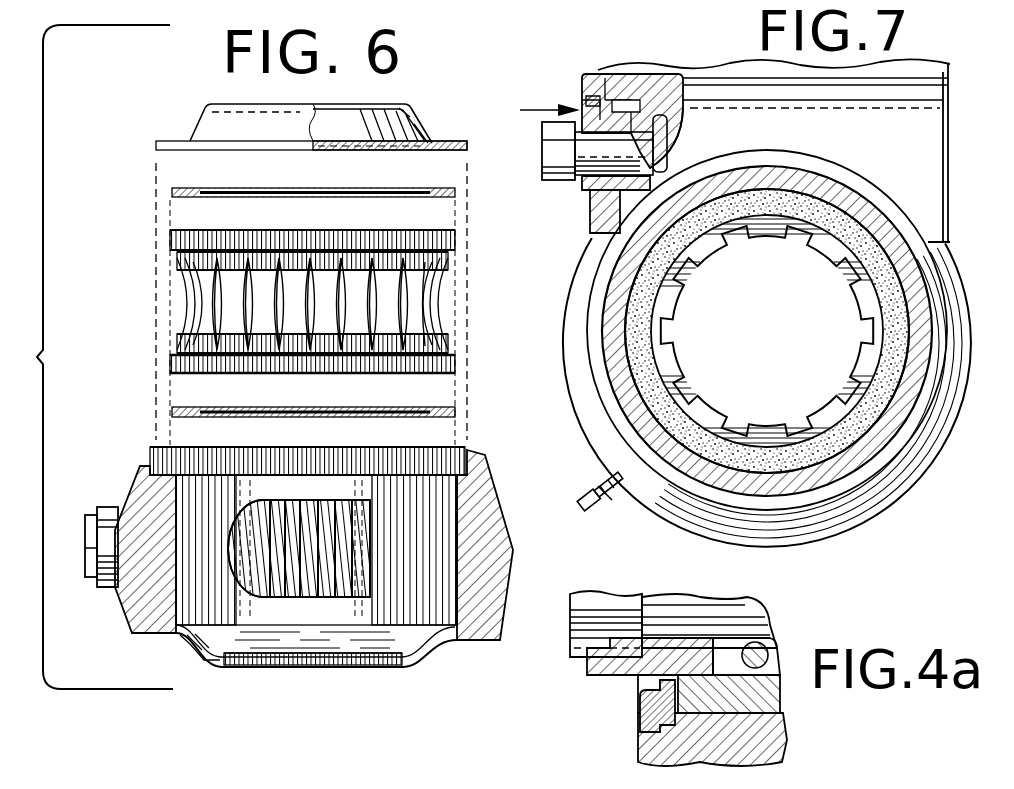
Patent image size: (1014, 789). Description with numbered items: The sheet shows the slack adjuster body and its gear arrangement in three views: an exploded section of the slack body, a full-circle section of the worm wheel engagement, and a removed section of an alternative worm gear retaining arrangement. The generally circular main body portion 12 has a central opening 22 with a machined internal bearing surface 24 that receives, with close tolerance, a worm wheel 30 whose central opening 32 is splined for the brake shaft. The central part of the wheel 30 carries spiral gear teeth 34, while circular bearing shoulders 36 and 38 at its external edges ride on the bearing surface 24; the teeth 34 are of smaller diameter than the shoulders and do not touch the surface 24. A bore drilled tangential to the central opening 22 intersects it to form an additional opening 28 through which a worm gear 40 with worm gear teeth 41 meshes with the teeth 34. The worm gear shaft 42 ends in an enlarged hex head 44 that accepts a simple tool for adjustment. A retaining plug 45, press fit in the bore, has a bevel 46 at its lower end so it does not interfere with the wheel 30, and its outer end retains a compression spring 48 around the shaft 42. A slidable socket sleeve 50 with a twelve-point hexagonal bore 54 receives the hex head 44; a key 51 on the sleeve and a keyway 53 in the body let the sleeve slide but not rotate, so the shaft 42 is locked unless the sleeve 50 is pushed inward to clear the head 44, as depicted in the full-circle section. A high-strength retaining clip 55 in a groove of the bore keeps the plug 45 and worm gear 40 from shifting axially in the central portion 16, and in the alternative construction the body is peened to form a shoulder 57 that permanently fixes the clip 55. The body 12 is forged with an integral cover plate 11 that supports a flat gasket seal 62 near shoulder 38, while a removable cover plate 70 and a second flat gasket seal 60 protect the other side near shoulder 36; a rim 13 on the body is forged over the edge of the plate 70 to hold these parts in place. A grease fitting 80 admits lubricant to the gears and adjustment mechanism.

In FIG. 6, the integral cover plate 11 is at (203, 652).
In FIG. 6, the main body portion 12 is at (138, 467).
In FIG. 7, the main body portion 12 is at (884, 500).
In FIG. 6, the rim 13 is at (150, 450).
In FIG. 7, the central portion 16 is at (890, 149).
In FIG. 4A, the central portion 16 is at (786, 726).
In FIG. 6, the central opening 22 is at (384, 602).
In FIG. 6, the internal bearing surface 24 is at (183, 583).
In FIG. 7, the internal bearing surface 24 is at (780, 482).
In FIG. 6, the additional opening 28 is at (320, 592).
In FIG. 6, the worm wheel 30 is at (175, 275).
In FIG. 7, the central opening 32 is at (818, 258).
In FIG. 6, the spiral gear teeth 34 is at (216, 305).
In FIG. 6, the circular bearing shoulder 36 is at (165, 238).
In FIG. 7, the circular bearing shoulder 36 is at (606, 498).
In FIG. 6, the circular bearing shoulder 38 is at (170, 360).
In FIG. 6, the worm gear 40 is at (312, 500).
In FIG. 6, the worm gear teeth 41 is at (370, 500).
In FIG. 7, the worm gear shaft 42 is at (605, 192).
In FIG. 6, the hex head 44 is at (85, 537).
In FIG. 7, the hex head 44 is at (550, 150).
In FIG. 4A, the hex head 44 is at (572, 638).
In FIG. 7, the retaining plug 45 is at (665, 102).
In FIG. 4A, the retaining plug 45 is at (709, 621).
In FIG. 6, the bevel 46 is at (262, 503).
In FIG. 7, the compression spring 48 is at (666, 150).
In FIG. 4A, the compression spring 48 is at (768, 652).
In FIG. 6, the socket sleeve 50 is at (103, 588).
In FIG. 7, the socket sleeve 50 is at (632, 112).
In FIG. 4A, the socket sleeve 50 is at (590, 674).
In FIG. 7, the key 51 is at (588, 98).
In FIG. 7, the keyway 53 is at (622, 102).
In FIG. 7, the hexagonal bore 54 is at (583, 106).
In FIG. 4A, the hexagonal bore 54 is at (607, 677).
In FIG. 7, the retaining clip 55 is at (588, 242).
In FIG. 4A, the retaining clip 55 is at (650, 728).
In FIG. 4A, the shoulder 57 is at (648, 708).
In FIG. 6, the flat gasket seal 60 is at (165, 186).
In FIG. 7, the flat gasket seal 60 is at (633, 310).
In FIG. 6, the flat gasket seal 62 is at (175, 410).
In FIG. 6, the removable cover plate 70 is at (212, 128).
In FIG. 7, the grease fitting 80 is at (590, 470).